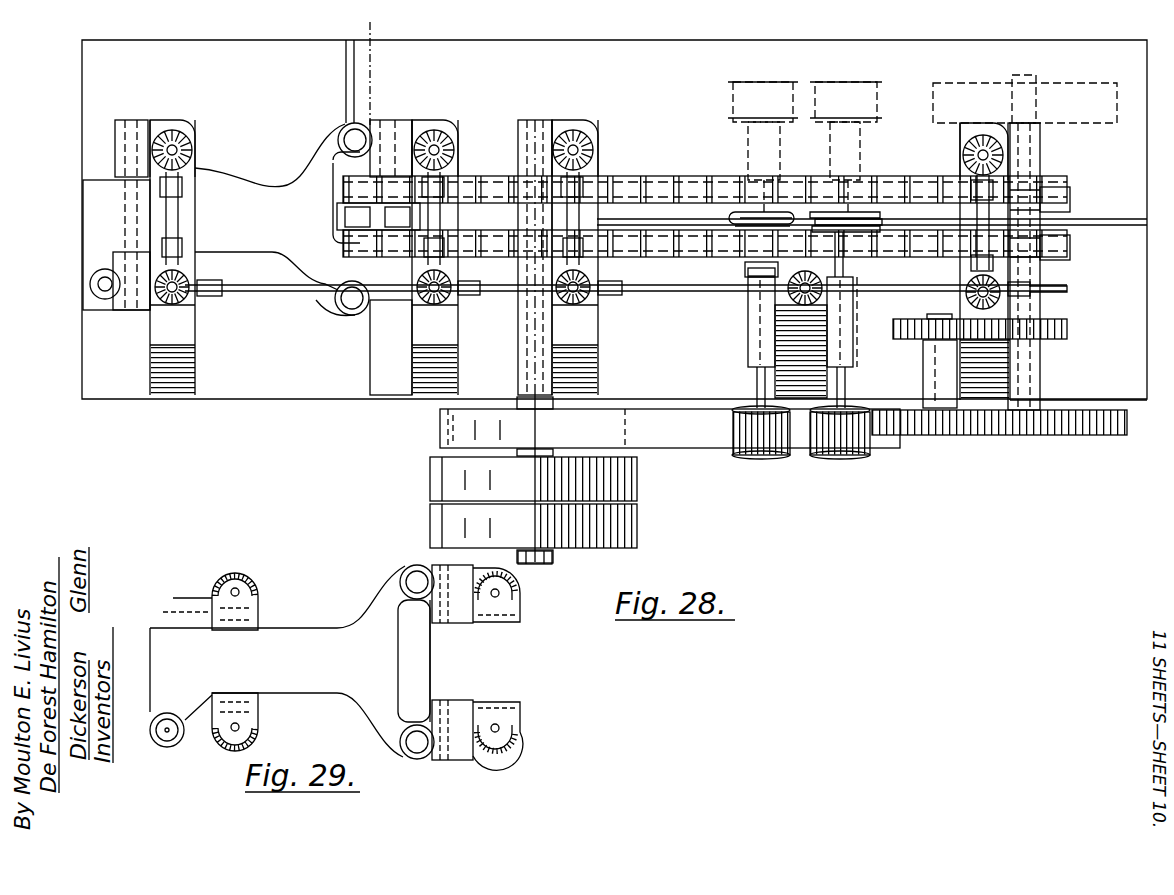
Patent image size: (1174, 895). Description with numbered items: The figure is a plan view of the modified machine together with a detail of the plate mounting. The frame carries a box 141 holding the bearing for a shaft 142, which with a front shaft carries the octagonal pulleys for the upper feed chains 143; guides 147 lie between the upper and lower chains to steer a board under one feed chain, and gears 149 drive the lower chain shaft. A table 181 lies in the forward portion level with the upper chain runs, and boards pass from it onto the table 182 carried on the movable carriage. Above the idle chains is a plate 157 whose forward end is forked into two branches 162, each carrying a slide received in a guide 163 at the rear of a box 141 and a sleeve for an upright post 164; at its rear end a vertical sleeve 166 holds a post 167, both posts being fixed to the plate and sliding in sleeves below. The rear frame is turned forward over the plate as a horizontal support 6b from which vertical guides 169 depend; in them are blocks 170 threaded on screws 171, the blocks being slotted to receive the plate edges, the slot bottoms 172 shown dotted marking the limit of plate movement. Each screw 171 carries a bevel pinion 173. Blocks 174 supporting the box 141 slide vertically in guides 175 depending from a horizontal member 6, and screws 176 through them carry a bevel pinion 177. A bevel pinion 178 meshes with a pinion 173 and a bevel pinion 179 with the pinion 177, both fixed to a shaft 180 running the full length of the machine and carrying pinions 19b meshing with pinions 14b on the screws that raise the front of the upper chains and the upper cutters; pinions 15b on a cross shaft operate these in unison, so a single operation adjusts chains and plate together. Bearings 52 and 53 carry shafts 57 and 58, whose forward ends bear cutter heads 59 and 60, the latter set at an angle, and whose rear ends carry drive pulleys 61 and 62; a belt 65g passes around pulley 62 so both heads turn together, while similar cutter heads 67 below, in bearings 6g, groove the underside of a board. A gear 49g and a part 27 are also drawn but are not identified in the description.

In FIG. 28, the shaft 27 is at (372, 71).
In FIG. 29, the shaft 27 is at (518, 557).
In FIG. 28, the post 164 is at (357, 138).
In FIG. 29, the post 164 is at (413, 578).
In FIG. 28, the box 141 is at (390, 135).
In FIG. 29, the box 141 is at (460, 623).
In FIG. 28, the branch 162 is at (316, 147).
In FIG. 29, the branch 162 is at (405, 600).
In FIG. 28, the plate 157 is at (270, 193).
In FIG. 29, the plate 157 is at (292, 615).
In FIG. 28, the bevel pinion 173 is at (190, 138).
In FIG. 28, the horizontal support 6b is at (182, 222).
In FIG. 28, the shaft 142 is at (350, 210).
In FIG. 28, the pinion 15b is at (185, 267).
In FIG. 28, the bevel pinion 177 is at (453, 148).
In FIG. 28, the pinion 14b is at (597, 146).
In FIG. 28, the cutter head 67 is at (778, 207).
In FIG. 28, the horizontal member 6 is at (998, 202).
In FIG. 28, the feed chain 143 is at (1070, 198).
In FIG. 28, the guide 147 is at (1103, 226).
In FIG. 28, the pinion 19b is at (598, 274).
In FIG. 28, the gear 149 is at (1070, 327).
In FIG. 28, the bearing 52 is at (852, 322).
In FIG. 28, the cutter head 59 is at (858, 234).
In FIG. 28, the cutter head 60 is at (747, 236).
In FIG. 28, the bearing 53 is at (755, 310).
In FIG. 28, the bearing 6g is at (817, 332).
In FIG. 28, the shaft 58 is at (757, 385).
In FIG. 28, the shaft 57 is at (846, 385).
In FIG. 28, the drive pulley 62 is at (770, 460).
In FIG. 28, the drive pulley 61 is at (833, 460).
In FIG. 28, the belt 65g is at (693, 440).
In FIG. 28, the rack gear 49g is at (1005, 433).
In FIG. 28, the table 181 is at (1082, 392).
In FIG. 28, the shaft 180 is at (686, 294).
In FIG. 28, the bevel pinion 179 is at (460, 300).
In FIG. 28, the bevel pinion 178 is at (190, 305).
In FIG. 28, the post 167 is at (98, 290).
In FIG. 29, the post 167 is at (172, 732).
In FIG. 28, the sleeve 166 is at (104, 302).
In FIG. 29, the sleeve 166 is at (158, 745).
In FIG. 28, the table 182 is at (262, 393).
In FIG. 29, the guide 169 is at (228, 575).
In FIG. 29, the screw 171 is at (248, 582).
In FIG. 29, the block 170 is at (212, 598).
In FIG. 29, the block bottom 172 is at (298, 677).
In FIG. 29, the guide 175 is at (515, 590).
In FIG. 29, the screw 176 is at (520, 585).
In FIG. 29, the block 174 is at (500, 610).
In FIG. 29, the guide 163 is at (440, 700).